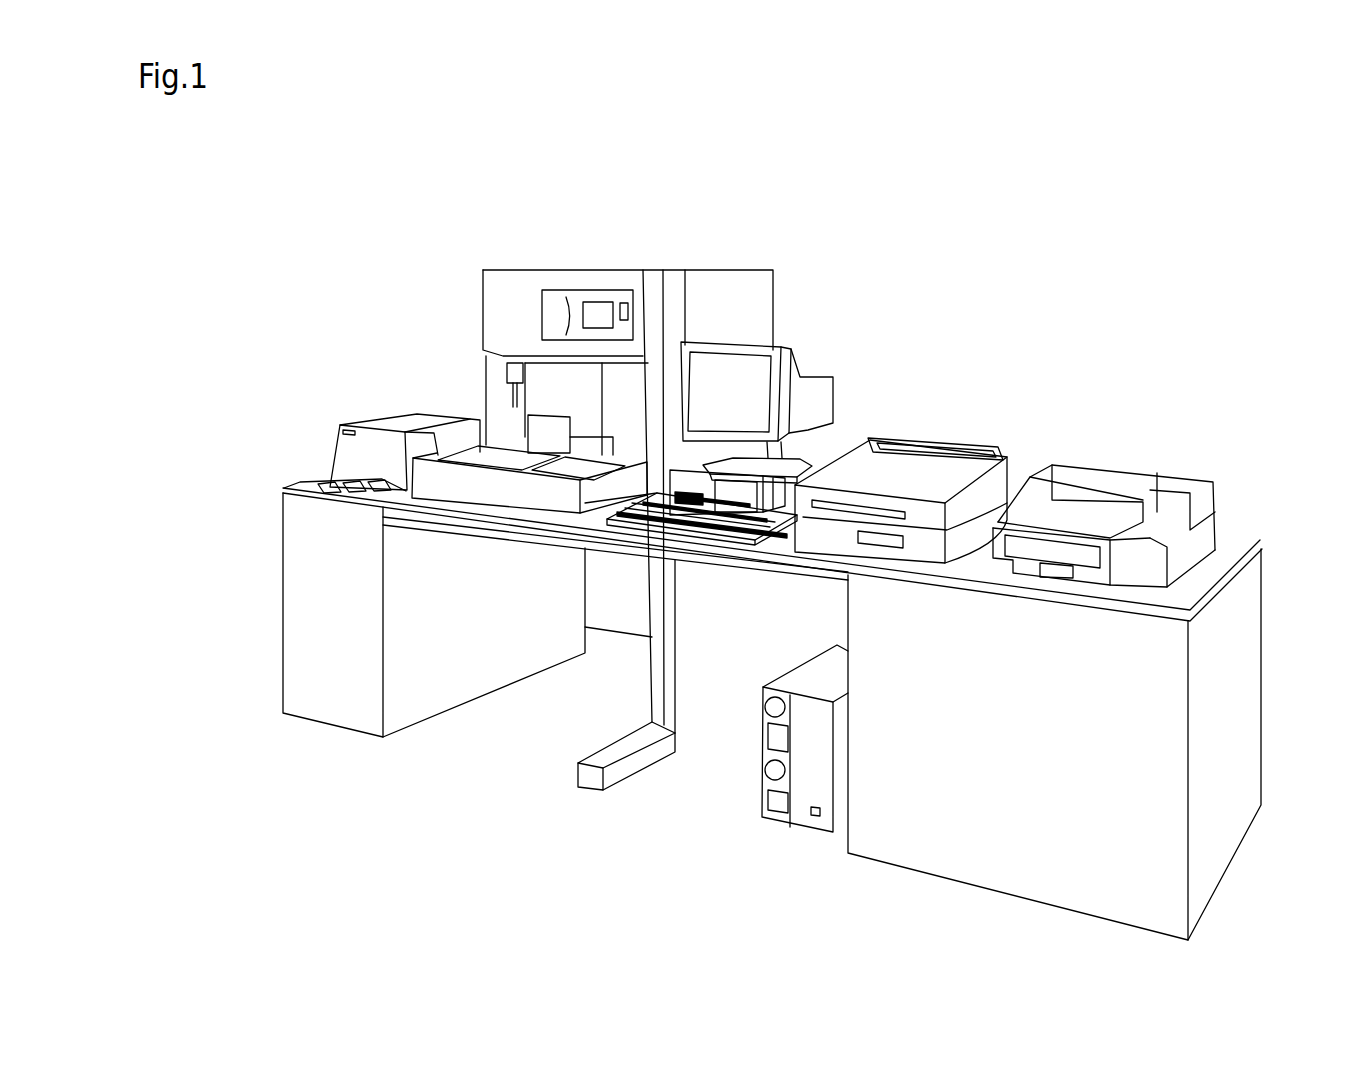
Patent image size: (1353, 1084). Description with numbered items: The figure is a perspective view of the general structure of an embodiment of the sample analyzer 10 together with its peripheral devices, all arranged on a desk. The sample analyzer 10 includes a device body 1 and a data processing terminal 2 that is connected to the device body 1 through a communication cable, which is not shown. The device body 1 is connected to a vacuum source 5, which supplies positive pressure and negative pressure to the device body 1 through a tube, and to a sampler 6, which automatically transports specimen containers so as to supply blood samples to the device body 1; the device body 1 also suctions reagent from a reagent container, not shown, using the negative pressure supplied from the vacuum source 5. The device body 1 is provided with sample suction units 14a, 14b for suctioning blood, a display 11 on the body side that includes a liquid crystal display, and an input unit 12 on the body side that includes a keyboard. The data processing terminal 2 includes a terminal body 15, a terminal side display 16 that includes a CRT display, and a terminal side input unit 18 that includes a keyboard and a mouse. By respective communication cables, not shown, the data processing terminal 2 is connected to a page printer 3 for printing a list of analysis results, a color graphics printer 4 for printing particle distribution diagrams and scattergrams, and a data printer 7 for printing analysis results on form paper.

The device body 1 is at (521, 302).
The data processing terminal 2 is at (845, 392).
The page printer 3 is at (887, 478).
The color graphics printer 4 is at (1090, 512).
The vacuum source 5 is at (793, 813).
The sampler 6 is at (522, 505).
The data printer 7 is at (367, 450).
The sample analyzer 10 is at (729, 252).
The display 11 is at (596, 304).
The input unit 12 is at (627, 303).
The sample suction unit 14a is at (517, 397).
The sample suction unit 14b is at (537, 433).
The terminal body 15 is at (745, 492).
The terminal side display 16 is at (757, 347).
The terminal side input unit 18 is at (742, 520).